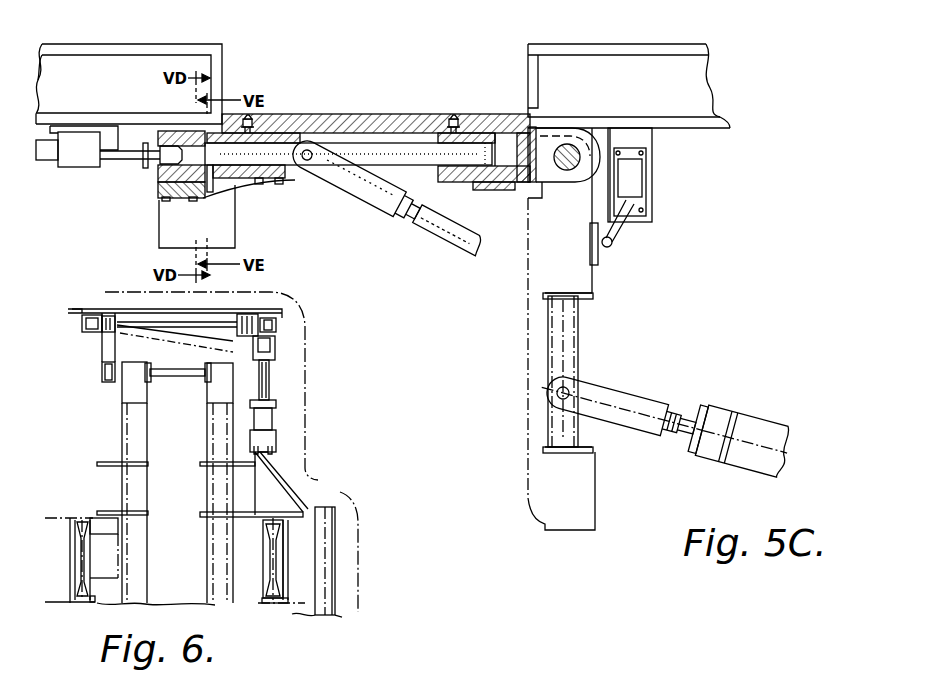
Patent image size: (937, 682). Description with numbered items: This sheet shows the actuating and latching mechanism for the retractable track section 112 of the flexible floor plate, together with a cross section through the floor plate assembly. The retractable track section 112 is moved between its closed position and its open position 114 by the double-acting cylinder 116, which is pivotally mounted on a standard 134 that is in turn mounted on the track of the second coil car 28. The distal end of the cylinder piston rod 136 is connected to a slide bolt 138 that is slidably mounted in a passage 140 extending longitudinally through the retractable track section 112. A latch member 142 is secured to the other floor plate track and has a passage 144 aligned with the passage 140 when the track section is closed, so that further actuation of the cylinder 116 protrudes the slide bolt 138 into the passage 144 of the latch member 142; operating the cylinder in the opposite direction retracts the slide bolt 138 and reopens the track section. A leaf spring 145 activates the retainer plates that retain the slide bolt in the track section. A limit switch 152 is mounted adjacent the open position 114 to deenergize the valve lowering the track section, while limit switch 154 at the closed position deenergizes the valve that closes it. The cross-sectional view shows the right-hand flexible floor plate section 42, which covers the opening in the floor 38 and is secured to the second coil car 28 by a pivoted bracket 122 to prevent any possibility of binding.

In FIG. 5C, the right-hand flexible floor plate section 42 is at (610, 72).
In FIG. 5C, the retractable track section 112 is at (389, 101).
In FIG. 5C, the passage 140 is at (507, 157).
In FIG. 5C, the slide bolt 138 is at (413, 150).
In FIG. 5C, the limit switch 152 is at (628, 183).
In FIG. 5C, the limit switch 154 is at (80, 162).
In FIG. 5C, the latch member 142 is at (162, 172).
In FIG. 5C, the passage 144 is at (213, 192).
In FIG. 5C, the leaf spring 145 is at (243, 186).
In FIG. 5C, the open position 114 is at (528, 365).
In FIG. 5C, the cylinder piston rod 136 is at (610, 396).
In FIG. 5C, the cylinder 116 is at (768, 416).
In FIG. 6, the cylinder 116 is at (266, 418).
In FIG. 6, the floor 38 is at (80, 310).
In FIG. 6, the pivoted bracket 122 is at (220, 344).
In FIG. 6, the second coil car 28 is at (318, 478).
In FIG. 6, the standard 134 is at (340, 492).